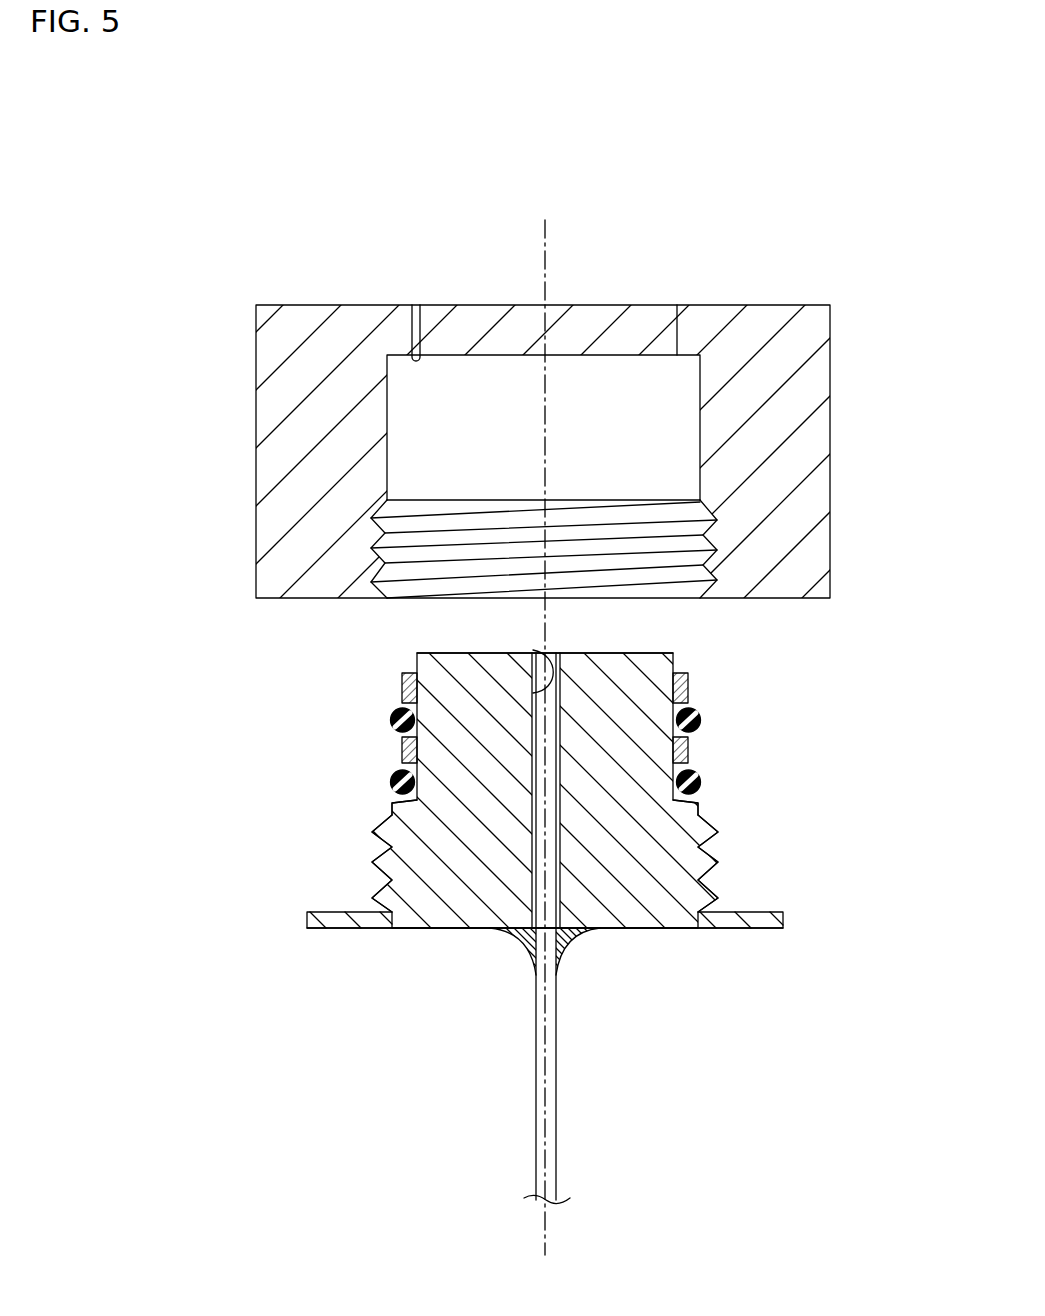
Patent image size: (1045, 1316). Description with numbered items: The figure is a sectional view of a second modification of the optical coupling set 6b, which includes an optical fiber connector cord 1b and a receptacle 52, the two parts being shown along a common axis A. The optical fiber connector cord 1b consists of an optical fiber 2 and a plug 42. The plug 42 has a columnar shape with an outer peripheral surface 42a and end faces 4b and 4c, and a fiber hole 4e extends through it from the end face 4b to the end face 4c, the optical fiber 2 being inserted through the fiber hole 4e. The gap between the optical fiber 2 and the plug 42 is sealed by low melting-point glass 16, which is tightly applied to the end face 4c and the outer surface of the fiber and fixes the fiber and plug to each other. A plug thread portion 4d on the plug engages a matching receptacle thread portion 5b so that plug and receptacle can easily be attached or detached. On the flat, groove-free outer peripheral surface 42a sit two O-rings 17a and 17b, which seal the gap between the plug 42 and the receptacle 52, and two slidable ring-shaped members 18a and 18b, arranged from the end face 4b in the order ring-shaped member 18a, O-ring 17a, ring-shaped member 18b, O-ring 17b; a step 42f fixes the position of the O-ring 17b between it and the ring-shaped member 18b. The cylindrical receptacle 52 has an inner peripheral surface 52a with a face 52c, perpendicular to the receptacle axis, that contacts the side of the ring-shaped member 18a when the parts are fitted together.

The axis A is at (545, 247).
The receptacle 52 is at (835, 430).
The inner peripheral surface 52a is at (700, 402).
The face 52c is at (421, 305).
The receptacle thread portion 5b is at (450, 518).
The optical coupling set 6b is at (812, 238).
The end face 4b is at (630, 653).
The outer peripheral surface 42a is at (416, 653).
The step 42f is at (392, 803).
The plug thread portion 4d is at (365, 815).
The ring-shaped member 18a is at (402, 688).
The ring-shaped member 18b is at (402, 750).
The O-ring 17a is at (392, 720).
The O-ring 17b is at (392, 782).
The end face 4c is at (418, 928).
The plug 42 is at (688, 932).
The low melting-point glass 16 is at (527, 947).
The optical fiber 2 is at (556, 1033).
The fiber hole 4e is at (537, 657).
The optical fiber connector cord 1b is at (828, 1125).